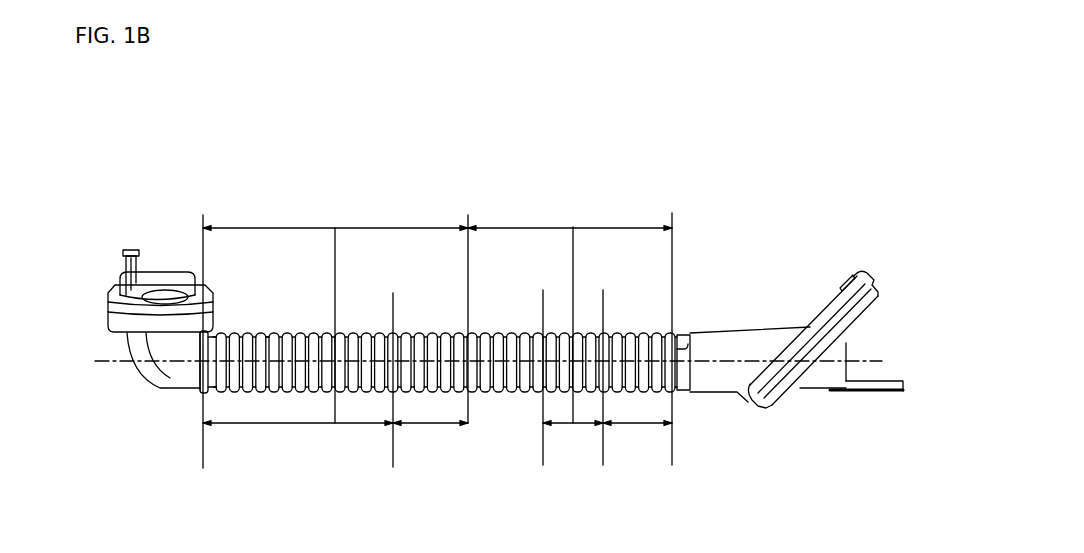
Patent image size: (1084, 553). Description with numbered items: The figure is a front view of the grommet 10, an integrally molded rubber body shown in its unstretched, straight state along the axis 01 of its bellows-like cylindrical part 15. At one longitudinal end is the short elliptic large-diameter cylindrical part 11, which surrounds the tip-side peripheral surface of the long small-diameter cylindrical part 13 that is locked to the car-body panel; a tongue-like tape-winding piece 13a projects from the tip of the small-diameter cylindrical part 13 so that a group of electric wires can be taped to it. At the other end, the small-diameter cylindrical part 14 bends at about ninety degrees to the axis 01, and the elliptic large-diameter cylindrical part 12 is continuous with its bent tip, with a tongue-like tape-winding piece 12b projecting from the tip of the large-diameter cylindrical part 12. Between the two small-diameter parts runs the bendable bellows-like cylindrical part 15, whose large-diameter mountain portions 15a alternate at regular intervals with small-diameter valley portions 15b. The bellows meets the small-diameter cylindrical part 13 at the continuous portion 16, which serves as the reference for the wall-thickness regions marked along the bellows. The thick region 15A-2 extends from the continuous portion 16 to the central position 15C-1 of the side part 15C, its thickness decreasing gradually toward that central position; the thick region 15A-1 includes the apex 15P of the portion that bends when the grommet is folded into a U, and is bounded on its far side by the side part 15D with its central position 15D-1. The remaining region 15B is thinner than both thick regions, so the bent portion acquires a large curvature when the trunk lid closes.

The grommet 10 is at (257, 141).
The large-diameter cylindrical part 11 is at (869, 271).
The large-diameter cylindrical part 12 is at (172, 271).
The tongue-like tape-winding piece 12b is at (128, 253).
The small-diameter cylindrical part 13 is at (796, 396).
The tongue-like tape-winding piece 13a is at (862, 383).
The small-diameter cylindrical part 14 is at (153, 373).
The bellows-like cylindrical part 15 is at (428, 322).
The mountain portion 15a is at (277, 333).
The valley portion 15b is at (270, 334).
The other region 15B is at (403, 377).
The side part 15C is at (570, 331).
The side part 15D is at (335, 334).
The thick region 15A-1 is at (445, 380).
The thick region 15A-2 is at (637, 377).
The central position 15D-1 is at (336, 353).
The central position 15C-1 is at (572, 368).
The apex 15P is at (463, 352).
The continuous portion 16 is at (679, 348).
The axis 01 is at (524, 363).